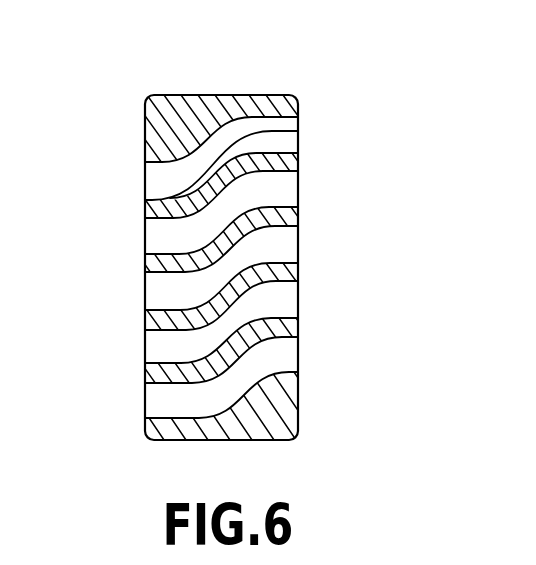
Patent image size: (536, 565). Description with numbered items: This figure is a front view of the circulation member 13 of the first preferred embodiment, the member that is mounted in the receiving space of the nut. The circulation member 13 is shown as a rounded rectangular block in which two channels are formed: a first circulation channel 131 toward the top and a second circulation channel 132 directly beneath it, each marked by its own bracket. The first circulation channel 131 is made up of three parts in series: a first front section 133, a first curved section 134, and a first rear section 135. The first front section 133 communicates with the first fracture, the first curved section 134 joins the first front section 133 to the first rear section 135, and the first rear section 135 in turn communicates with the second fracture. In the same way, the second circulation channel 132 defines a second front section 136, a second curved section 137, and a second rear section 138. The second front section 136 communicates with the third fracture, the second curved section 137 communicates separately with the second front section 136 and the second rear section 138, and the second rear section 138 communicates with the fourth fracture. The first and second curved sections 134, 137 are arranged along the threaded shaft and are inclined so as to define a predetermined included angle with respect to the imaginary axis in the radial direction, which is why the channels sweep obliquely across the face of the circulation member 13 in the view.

The circulation member 13 is at (147, 98).
The first circulation channel 131 is at (222, 84).
The second circulation channel 132 is at (271, 190).
The first front section 133 is at (165, 162).
The first curved section 134 is at (226, 122).
The first rear section 135 is at (299, 101).
The second front section 136 is at (298, 131).
The second curved section 137 is at (240, 169).
The second rear section 138 is at (265, 171).